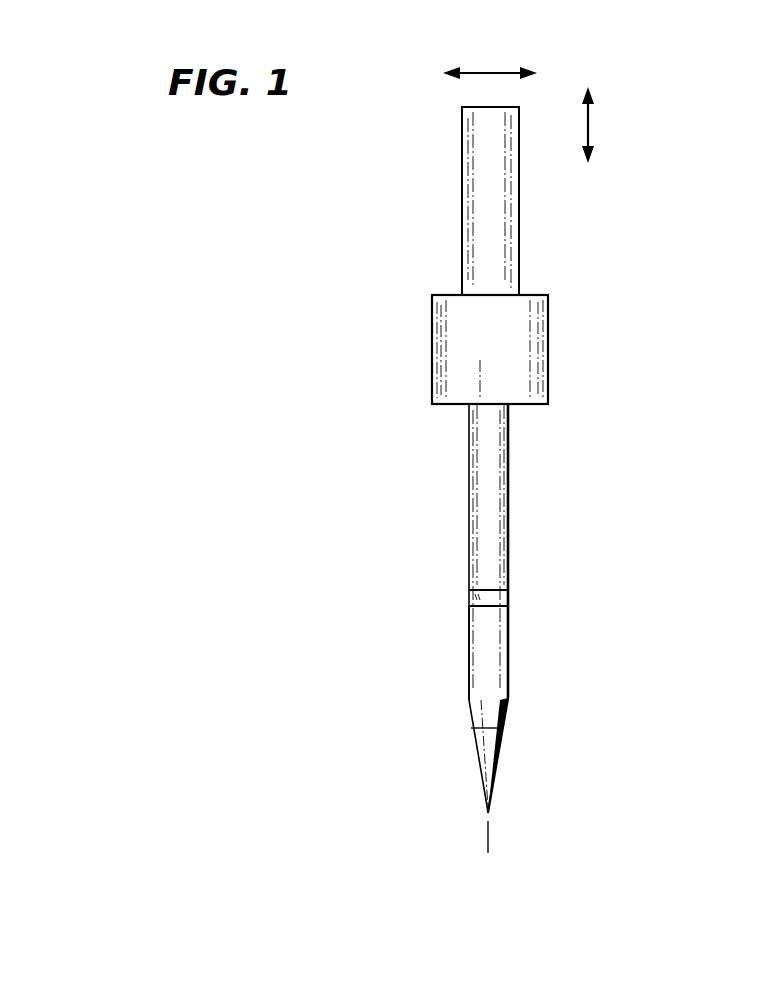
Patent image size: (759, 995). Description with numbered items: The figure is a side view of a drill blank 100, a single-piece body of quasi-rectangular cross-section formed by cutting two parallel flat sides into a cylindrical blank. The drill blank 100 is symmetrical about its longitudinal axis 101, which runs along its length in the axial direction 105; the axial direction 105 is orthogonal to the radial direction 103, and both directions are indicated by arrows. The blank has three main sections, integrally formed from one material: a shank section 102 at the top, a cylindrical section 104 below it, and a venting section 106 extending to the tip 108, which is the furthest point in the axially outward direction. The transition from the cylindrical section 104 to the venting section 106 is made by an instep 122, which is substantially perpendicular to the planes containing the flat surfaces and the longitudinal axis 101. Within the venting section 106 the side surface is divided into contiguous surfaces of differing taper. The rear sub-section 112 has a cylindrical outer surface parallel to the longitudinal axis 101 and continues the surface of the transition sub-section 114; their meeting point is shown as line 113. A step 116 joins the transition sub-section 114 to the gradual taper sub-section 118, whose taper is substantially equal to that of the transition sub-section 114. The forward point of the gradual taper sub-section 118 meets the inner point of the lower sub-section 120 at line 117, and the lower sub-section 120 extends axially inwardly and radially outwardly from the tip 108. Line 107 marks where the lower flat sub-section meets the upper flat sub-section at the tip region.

The drill blank 100 is at (660, 283).
The longitudinal axis 101 is at (489, 855).
The shank section 102 is at (371, 105).
The radial direction 103 is at (490, 73).
The cylindrical section 104 is at (369, 300).
The axial direction 105 is at (588, 118).
The venting section 106 is at (459, 646).
The line 107 is at (508, 700).
The tip 108 is at (490, 812).
The rear sub-section 112 is at (483, 466).
The line 113 is at (508, 590).
The transition sub-section 114 is at (468, 590).
The step 116 is at (468, 608).
The line 117 is at (471, 728).
The gradual taper sub-section 118 is at (483, 686).
The lower sub-section 120 is at (485, 768).
The instep 122 is at (525, 412).